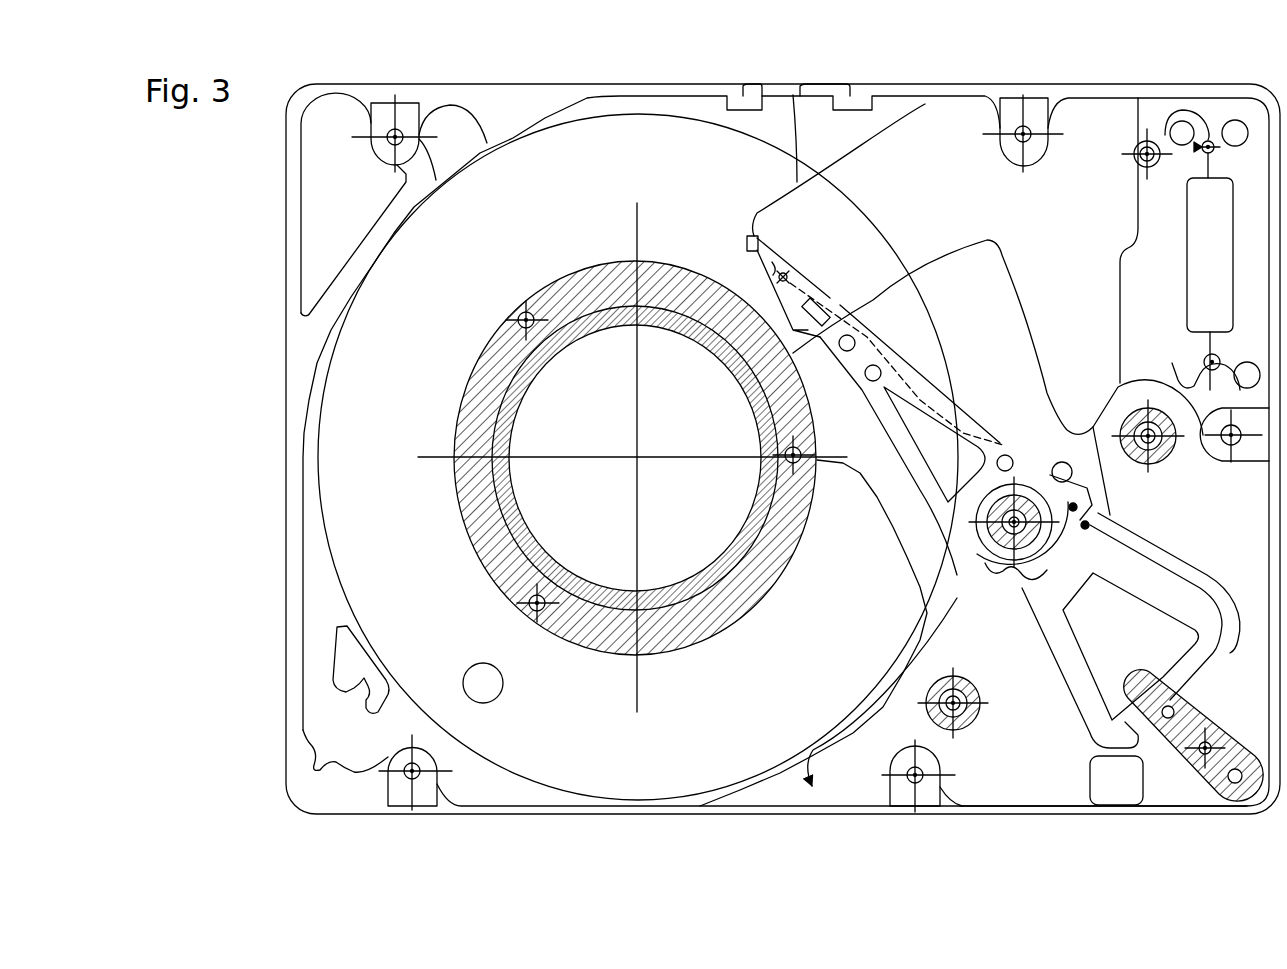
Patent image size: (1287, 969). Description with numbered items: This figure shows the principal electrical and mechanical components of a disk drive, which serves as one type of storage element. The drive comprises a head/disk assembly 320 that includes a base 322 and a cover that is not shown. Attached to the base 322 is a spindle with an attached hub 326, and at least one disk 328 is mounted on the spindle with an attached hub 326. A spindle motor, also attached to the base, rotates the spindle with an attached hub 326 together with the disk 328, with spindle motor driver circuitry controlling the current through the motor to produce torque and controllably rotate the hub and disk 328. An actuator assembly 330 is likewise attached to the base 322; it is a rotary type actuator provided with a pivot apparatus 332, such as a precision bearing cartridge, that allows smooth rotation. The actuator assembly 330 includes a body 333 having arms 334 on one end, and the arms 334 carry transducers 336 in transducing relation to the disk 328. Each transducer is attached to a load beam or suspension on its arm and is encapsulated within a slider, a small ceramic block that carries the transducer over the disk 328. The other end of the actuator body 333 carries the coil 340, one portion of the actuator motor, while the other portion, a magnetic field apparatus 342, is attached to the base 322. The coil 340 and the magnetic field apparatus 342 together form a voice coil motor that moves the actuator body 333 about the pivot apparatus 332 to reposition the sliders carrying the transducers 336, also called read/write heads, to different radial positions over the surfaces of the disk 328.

The head/disk assembly 320 is at (327, 795).
The base 322 is at (560, 436).
The spindle with an attached hub 326 is at (574, 270).
The disk 328 is at (422, 601).
The actuator assembly 330 is at (1039, 425).
The pivot apparatus 332 is at (1013, 553).
The body 333 is at (985, 568).
The arms 334 is at (917, 397).
The transducers 336 is at (683, 263).
The coil 340 is at (1216, 680).
The magnetic field apparatus 342 is at (1040, 793).